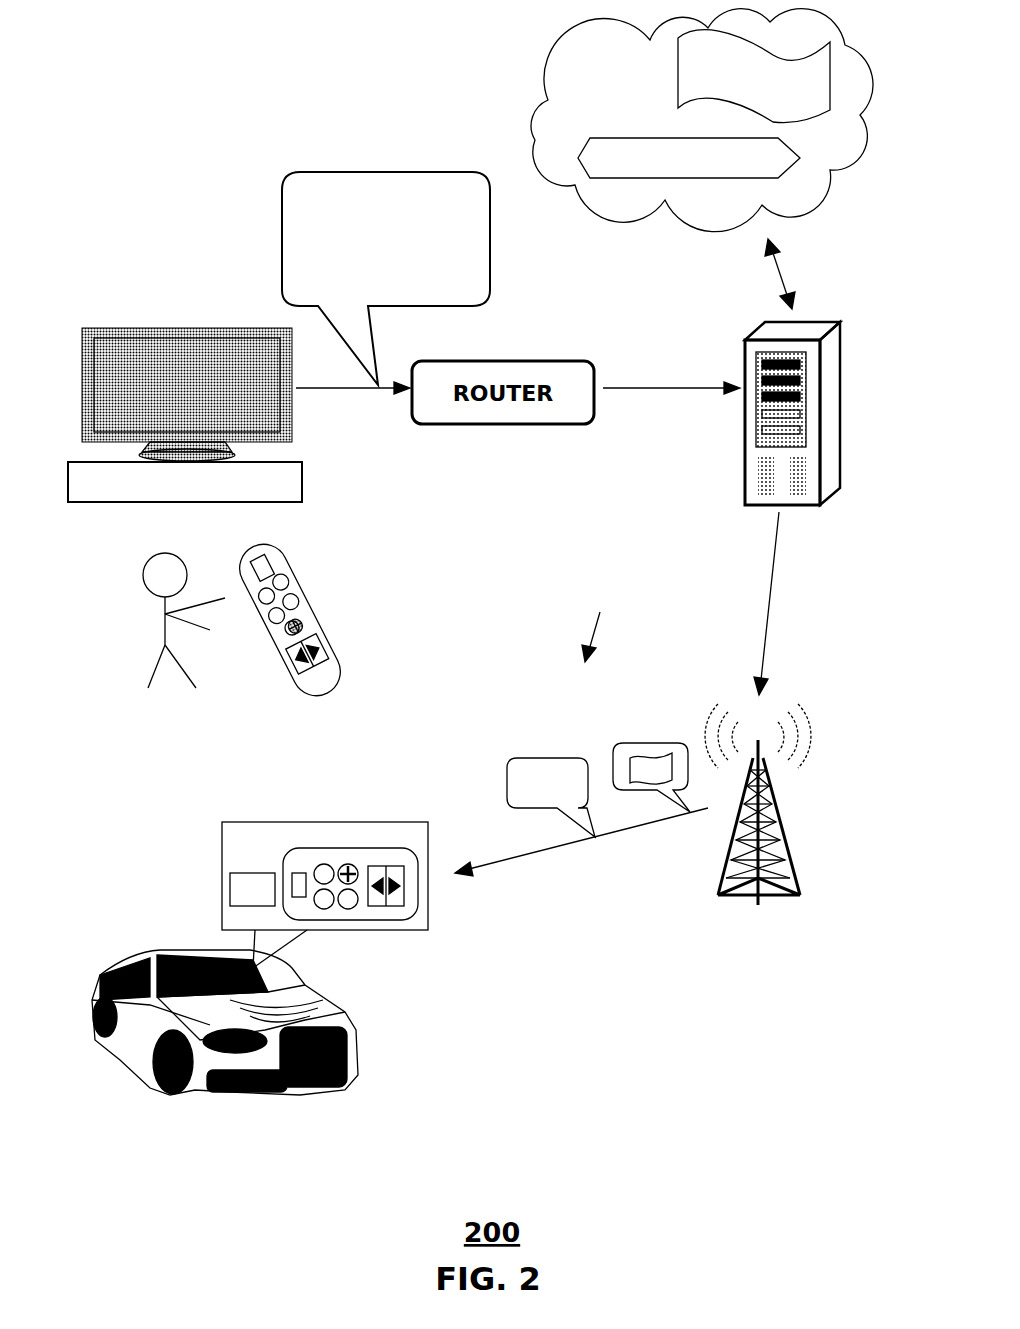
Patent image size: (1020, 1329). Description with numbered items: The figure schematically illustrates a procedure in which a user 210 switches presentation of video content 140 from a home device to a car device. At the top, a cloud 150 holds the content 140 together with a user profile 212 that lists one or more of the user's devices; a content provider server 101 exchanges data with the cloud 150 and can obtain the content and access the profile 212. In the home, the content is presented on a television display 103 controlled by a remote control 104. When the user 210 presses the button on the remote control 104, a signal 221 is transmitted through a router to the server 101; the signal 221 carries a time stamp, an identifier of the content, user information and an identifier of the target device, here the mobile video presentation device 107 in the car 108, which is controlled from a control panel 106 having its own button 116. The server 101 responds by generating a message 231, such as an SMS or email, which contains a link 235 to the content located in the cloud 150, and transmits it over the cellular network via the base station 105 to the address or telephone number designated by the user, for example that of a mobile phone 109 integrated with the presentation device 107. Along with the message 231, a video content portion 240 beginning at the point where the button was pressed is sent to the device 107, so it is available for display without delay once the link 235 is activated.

The content provider server 101 is at (745, 345).
The television display 103 is at (210, 333).
The remote control 104 is at (298, 620).
The base station 105 is at (776, 818).
The control panel 106 is at (325, 848).
The mobile video presentation device 107 is at (222, 850).
The car 108 is at (400, 1023).
The mobile phone 109 is at (232, 889).
The button 116 is at (349, 866).
The video content 140 is at (677, 78).
The cloud 150 is at (545, 82).
The user 210 is at (118, 561).
The profile 212 is at (627, 136).
The signal 221 is at (348, 172).
The message 231 is at (602, 621).
The link 235 is at (548, 757).
The video content portion 240 is at (652, 757).